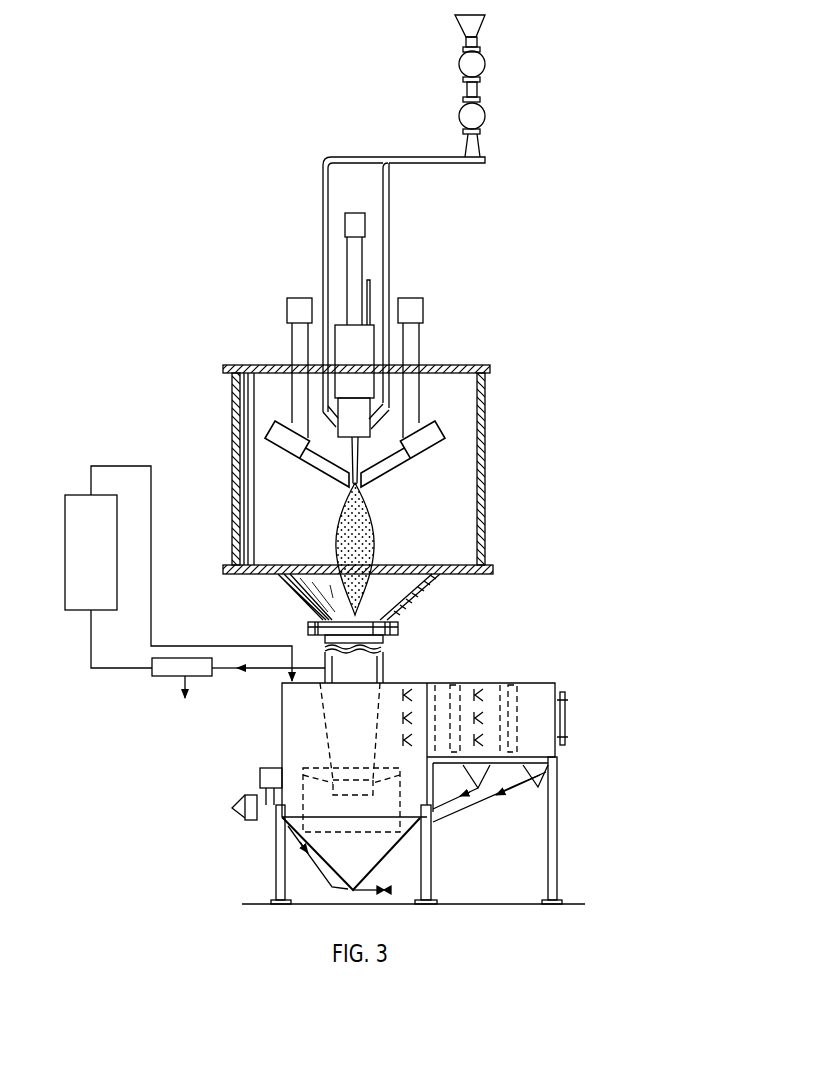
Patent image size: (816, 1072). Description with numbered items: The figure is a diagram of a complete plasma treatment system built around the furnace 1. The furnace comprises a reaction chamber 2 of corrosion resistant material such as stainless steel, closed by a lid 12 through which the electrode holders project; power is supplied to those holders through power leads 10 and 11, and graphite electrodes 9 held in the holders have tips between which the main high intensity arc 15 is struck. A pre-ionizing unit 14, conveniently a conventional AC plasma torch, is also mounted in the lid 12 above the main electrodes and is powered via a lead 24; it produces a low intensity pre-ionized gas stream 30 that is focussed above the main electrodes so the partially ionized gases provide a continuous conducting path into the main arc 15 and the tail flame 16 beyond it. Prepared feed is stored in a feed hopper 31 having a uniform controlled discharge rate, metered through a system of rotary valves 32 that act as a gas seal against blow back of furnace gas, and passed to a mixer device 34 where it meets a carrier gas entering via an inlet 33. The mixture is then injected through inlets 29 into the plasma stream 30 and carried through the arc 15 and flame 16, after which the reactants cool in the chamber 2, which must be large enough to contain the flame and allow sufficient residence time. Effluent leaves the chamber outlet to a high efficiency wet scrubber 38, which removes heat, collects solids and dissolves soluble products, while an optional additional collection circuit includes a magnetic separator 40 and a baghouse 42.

The furnace 1 is at (376, 507).
The reaction chamber 2 is at (232, 447).
The graphite electrodes 9 is at (343, 473).
The power lead 10 is at (288, 303).
The power lead 11 is at (425, 304).
The lid 12 is at (441, 368).
The pre-ionizing unit 14 is at (346, 346).
The main high intensity arc 15 is at (363, 492).
The tail flame 16 is at (366, 535).
The lead 24 is at (343, 215).
The inlets 29 is at (335, 420).
The pre-ionized gas stream 30 is at (348, 446).
The feed hopper 31 is at (481, 26).
The rotary valves 32 is at (487, 110).
The inlet 33 is at (486, 160).
The mixer device 34 is at (416, 165).
The wet scrubber 38 is at (278, 737).
The magnetic separator 40 is at (163, 673).
The baghouse 42 is at (68, 548).